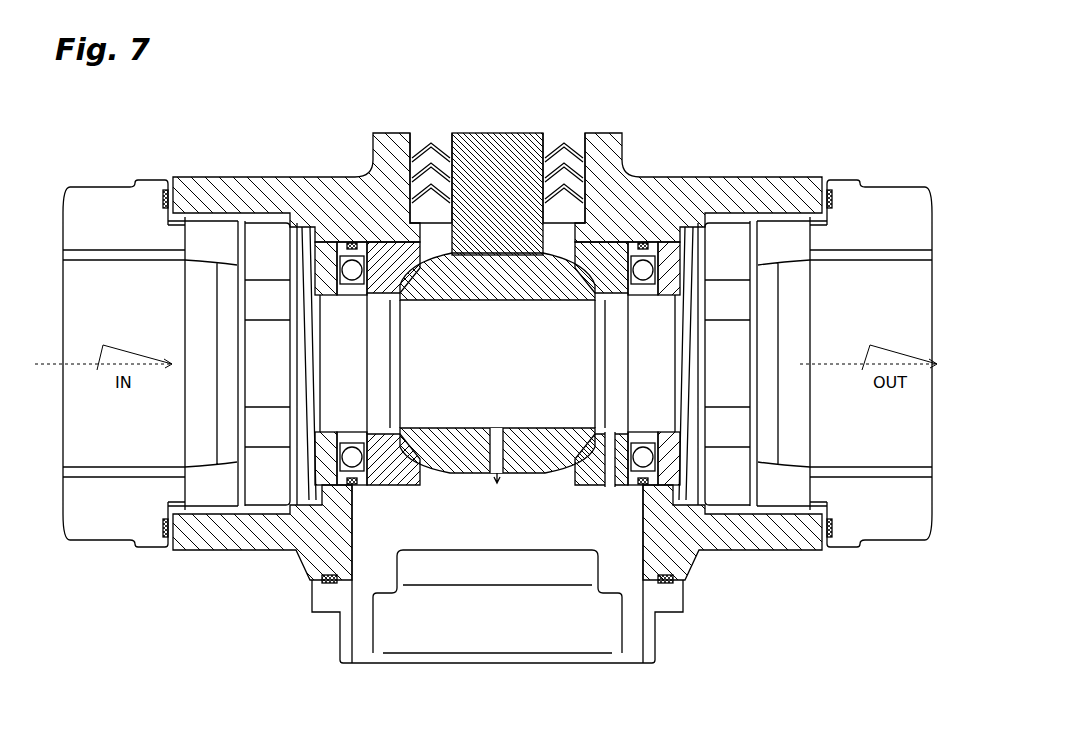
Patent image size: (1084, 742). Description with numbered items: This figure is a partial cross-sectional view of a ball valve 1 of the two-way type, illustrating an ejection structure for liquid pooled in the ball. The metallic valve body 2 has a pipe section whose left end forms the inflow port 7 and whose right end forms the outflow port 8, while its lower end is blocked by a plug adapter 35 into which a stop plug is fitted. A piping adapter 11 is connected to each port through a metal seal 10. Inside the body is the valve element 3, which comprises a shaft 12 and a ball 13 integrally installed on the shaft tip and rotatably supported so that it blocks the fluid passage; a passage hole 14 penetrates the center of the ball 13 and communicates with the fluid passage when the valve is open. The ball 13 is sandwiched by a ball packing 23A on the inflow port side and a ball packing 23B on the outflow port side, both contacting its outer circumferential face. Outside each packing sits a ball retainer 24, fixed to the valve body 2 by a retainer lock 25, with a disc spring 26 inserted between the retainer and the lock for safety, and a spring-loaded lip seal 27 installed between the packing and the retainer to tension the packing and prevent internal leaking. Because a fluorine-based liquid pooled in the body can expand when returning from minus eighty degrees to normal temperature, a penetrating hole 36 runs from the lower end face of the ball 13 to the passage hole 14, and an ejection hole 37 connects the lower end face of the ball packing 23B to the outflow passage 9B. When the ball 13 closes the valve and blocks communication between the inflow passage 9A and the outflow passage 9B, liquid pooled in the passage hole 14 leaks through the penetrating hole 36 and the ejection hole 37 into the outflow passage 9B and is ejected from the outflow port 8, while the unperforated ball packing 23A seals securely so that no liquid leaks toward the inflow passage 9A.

The ball valve 1 is at (497, 152).
The valve body 2 is at (770, 177).
The valve element 3 is at (565, 168).
The inflow port 7 is at (217, 315).
The outflow port 8 is at (778, 313).
The inflow passage 9A is at (358, 378).
The outflow passage 9B is at (672, 378).
The metal seal 10 is at (163, 193).
The piping adapter 11 is at (93, 183).
The shaft 12 is at (541, 148).
The ball 13 is at (592, 217).
The passage hole 14 is at (492, 378).
The ball packing on inflow port side 23A is at (397, 482).
The ball packing on outflow port side 23B is at (578, 482).
The ball retainer 24 is at (303, 503).
The retainer lock 25 is at (296, 468).
The disc spring 26 is at (237, 505).
The spring-loaded lip seal 27 is at (346, 243).
The plug adapter 35 is at (653, 637).
The penetrating hole 36 is at (497, 427).
The ejection hole 37 is at (613, 424).